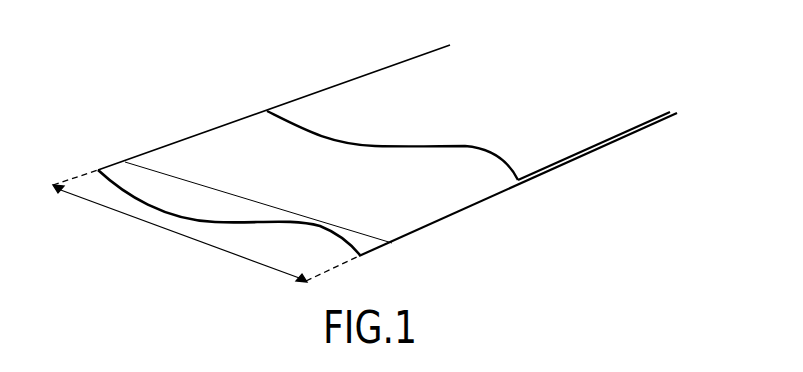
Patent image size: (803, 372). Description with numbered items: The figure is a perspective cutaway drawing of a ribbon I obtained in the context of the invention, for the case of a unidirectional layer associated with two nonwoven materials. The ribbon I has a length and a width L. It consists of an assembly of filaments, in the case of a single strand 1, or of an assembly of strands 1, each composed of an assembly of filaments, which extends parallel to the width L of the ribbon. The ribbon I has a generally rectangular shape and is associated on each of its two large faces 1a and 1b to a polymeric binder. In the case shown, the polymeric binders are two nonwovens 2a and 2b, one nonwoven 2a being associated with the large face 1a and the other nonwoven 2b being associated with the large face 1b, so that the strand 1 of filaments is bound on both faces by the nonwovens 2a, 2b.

The ribbon I is at (133, 78).
The strand 1 is at (195, 129).
The large face 1a is at (440, 221).
The large face 1b is at (376, 238).
The nonwoven 2a is at (386, 80).
The nonwoven 2b is at (118, 172).
The width L is at (177, 234).